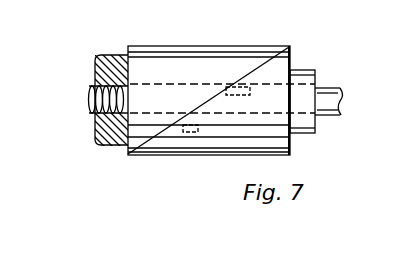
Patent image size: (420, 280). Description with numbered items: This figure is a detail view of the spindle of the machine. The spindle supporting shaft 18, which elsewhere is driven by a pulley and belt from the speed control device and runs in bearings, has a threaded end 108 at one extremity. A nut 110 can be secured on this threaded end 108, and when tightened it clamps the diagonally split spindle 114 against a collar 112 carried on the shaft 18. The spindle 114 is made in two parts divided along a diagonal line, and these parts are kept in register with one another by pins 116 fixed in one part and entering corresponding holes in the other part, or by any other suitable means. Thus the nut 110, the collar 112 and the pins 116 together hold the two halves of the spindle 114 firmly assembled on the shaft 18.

The spindle supporting shaft 18 is at (335, 92).
The threaded end 108 is at (91, 102).
The nut 110 is at (97, 142).
The collar 112 is at (305, 72).
The diagonally split spindle 114 is at (208, 62).
The pins 116 is at (192, 136).